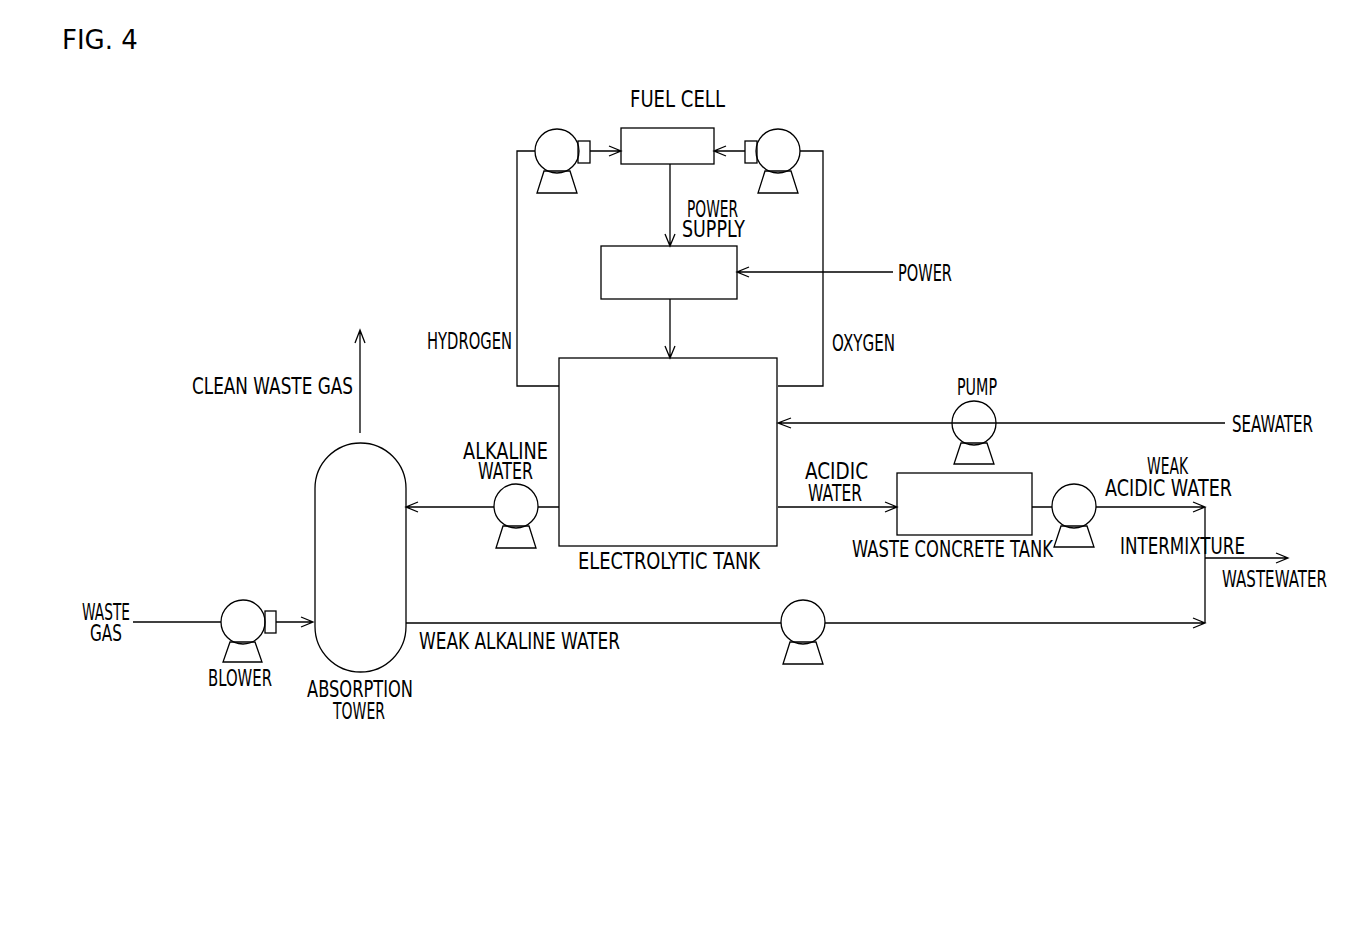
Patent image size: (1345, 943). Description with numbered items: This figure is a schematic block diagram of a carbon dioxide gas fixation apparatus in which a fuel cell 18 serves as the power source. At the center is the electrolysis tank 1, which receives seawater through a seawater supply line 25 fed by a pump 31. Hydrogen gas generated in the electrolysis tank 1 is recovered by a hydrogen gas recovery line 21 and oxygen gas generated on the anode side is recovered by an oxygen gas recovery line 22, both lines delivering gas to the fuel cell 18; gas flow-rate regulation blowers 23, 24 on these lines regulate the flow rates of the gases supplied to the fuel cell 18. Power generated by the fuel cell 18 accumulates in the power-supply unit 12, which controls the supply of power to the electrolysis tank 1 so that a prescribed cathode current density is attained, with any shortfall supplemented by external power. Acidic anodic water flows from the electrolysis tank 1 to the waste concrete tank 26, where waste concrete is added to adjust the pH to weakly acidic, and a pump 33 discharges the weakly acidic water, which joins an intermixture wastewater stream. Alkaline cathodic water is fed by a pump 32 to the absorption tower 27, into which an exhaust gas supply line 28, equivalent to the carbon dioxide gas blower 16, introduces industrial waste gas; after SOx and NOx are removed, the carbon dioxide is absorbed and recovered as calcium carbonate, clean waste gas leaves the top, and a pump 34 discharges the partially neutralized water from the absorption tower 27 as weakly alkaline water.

The electrolysis tank 1 is at (737, 357).
The power-supply unit 12 is at (751, 256).
The carbon dioxide gas blower 16 is at (202, 655).
The fuel cell 18 is at (703, 127).
The hydrogen gas recovery line 21 is at (505, 256).
The oxygen gas recovery line 22 is at (836, 254).
The gas flow-rate regulation blower 23 is at (548, 130).
The gas flow-rate regulation blower 24 is at (795, 132).
The seawater supply line 25 is at (1172, 422).
The waste concrete tank 26 is at (1020, 473).
The absorption tower 27 is at (315, 495).
The exhaust gas supply line 28 is at (205, 602).
The pump 31 is at (992, 407).
The pump 32 is at (495, 518).
The pump 33 is at (1095, 517).
The pump 34 is at (822, 635).